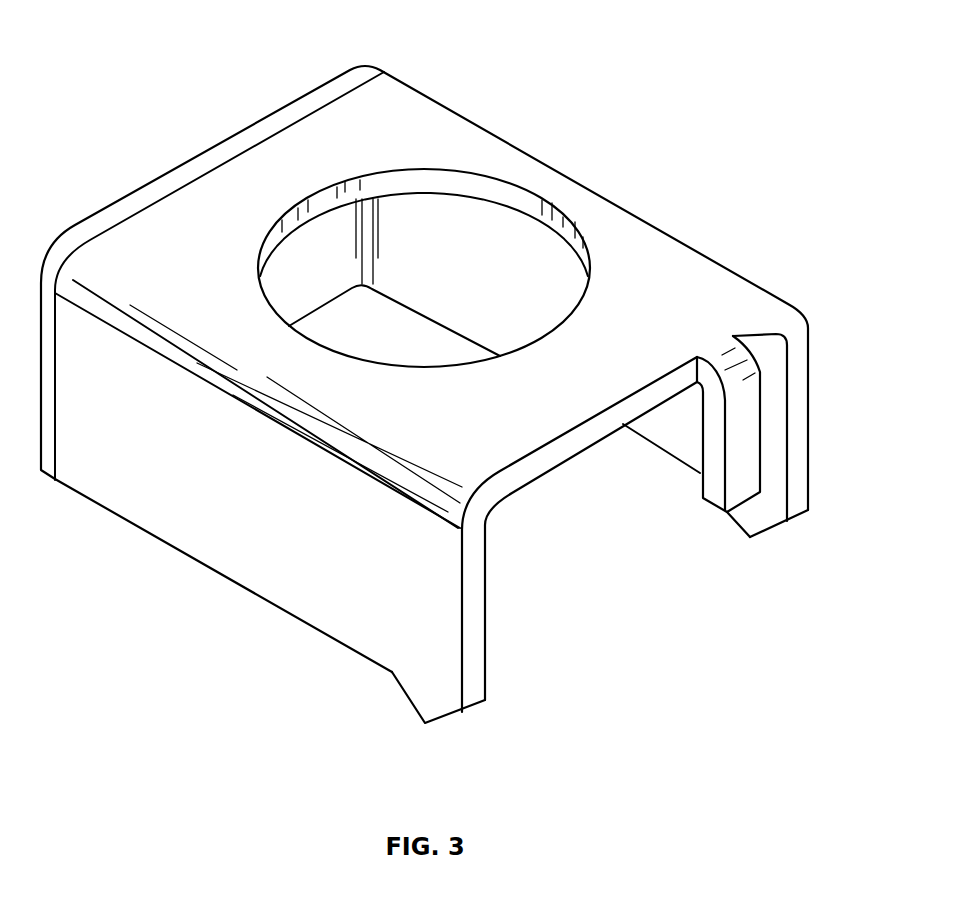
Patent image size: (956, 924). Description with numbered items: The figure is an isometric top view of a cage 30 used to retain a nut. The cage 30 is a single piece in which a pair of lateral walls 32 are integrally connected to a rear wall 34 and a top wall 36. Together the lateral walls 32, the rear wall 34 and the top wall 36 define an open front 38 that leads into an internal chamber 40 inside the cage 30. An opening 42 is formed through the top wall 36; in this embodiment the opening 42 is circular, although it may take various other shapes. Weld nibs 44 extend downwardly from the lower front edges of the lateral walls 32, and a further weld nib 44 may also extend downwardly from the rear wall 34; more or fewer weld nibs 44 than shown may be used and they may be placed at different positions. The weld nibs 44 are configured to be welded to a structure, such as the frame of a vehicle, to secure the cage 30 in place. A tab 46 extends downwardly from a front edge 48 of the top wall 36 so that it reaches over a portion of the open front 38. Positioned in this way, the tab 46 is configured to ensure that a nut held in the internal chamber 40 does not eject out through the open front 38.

The cage 30 is at (138, 52).
The lateral walls 32 is at (188, 490).
The rear wall 34 is at (110, 205).
The top wall 36 is at (430, 132).
The open front 38 is at (577, 551).
The internal chamber 40 is at (415, 327).
The opening 42 is at (343, 183).
The weld nibs 44 is at (425, 723).
The tab 46 is at (737, 433).
The front edge 48 is at (678, 377).